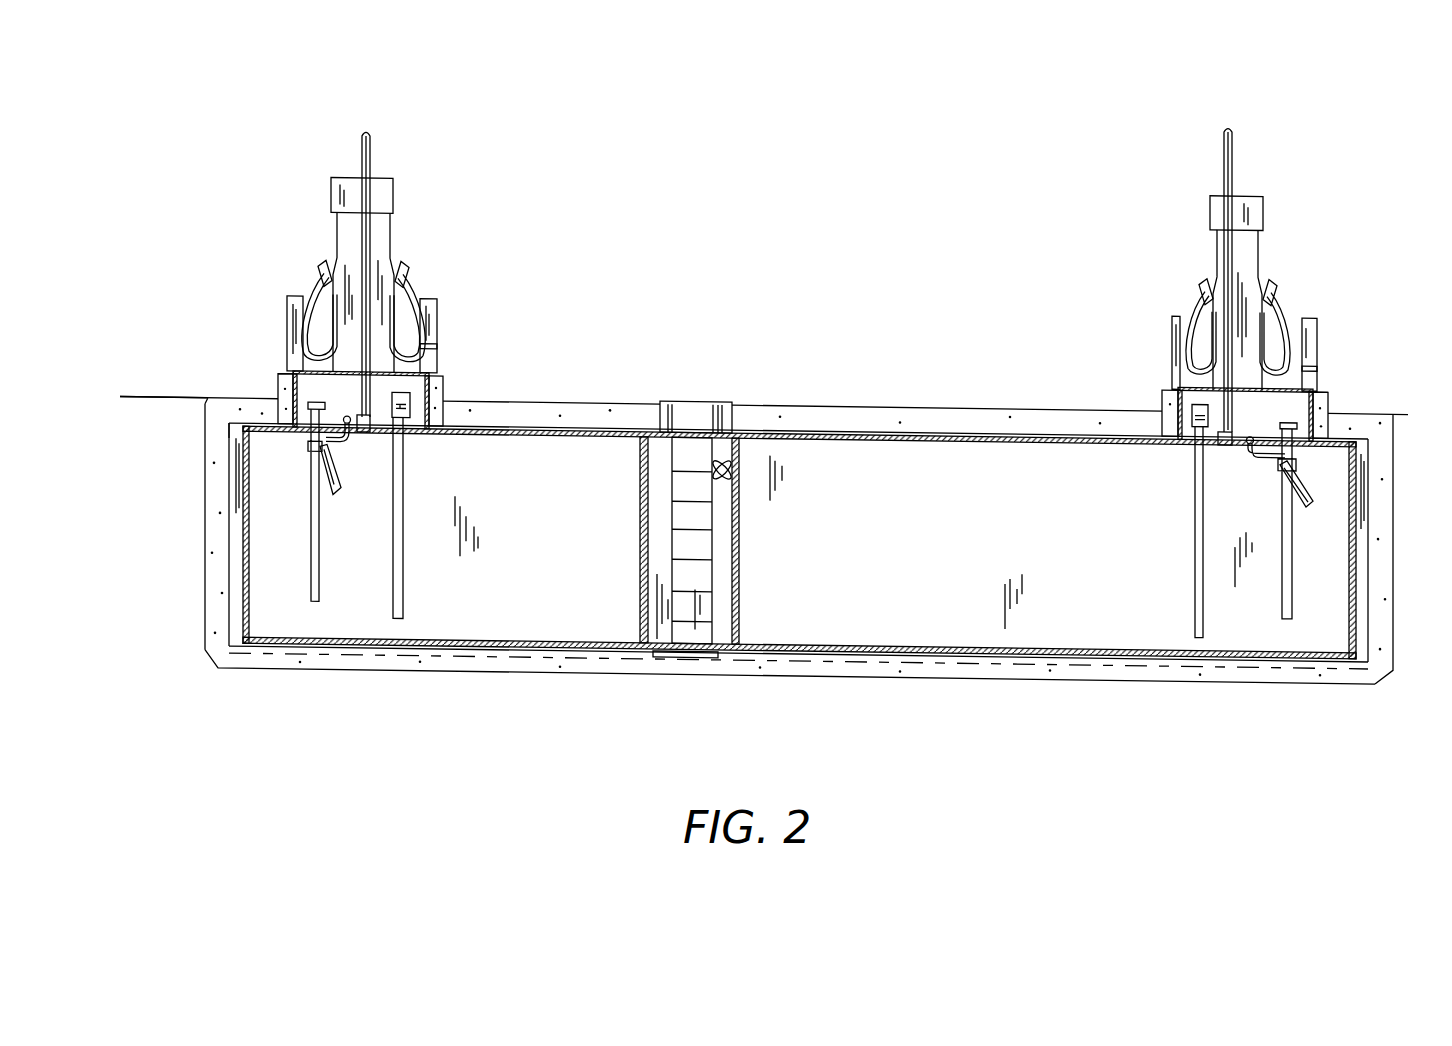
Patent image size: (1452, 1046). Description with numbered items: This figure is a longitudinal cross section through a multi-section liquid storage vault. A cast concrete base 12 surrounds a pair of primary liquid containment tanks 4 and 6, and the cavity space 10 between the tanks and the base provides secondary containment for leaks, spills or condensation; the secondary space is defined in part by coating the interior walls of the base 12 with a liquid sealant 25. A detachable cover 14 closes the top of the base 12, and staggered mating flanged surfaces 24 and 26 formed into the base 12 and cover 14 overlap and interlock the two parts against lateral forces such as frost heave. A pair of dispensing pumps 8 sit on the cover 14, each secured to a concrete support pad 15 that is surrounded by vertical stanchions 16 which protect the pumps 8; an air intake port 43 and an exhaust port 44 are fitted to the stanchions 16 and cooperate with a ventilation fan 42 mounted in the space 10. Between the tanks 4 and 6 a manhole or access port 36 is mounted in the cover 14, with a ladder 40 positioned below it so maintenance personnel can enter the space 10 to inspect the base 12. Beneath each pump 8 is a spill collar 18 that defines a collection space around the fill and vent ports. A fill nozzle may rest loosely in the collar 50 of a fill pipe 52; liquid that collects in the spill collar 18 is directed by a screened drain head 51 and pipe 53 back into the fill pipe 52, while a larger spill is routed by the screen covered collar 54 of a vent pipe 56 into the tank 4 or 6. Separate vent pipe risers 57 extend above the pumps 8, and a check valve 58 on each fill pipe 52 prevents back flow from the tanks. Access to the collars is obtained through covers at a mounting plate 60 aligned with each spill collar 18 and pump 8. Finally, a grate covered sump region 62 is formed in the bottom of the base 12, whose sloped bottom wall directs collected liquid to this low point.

The primary liquid containment tank 4 is at (245, 554).
The primary liquid containment tank 6 is at (1357, 588).
The dispensing pump 8 is at (391, 188).
The cavity space 10 is at (722, 626).
The cast concrete base 12 is at (1395, 536).
The detachable cover 14 is at (208, 425).
The concrete support pad 15 is at (443, 387).
The vertical stanchion 16 is at (432, 304).
The spill collar 18 is at (290, 384).
The flanged surface 24 is at (218, 435).
The liquid sealant 25 is at (225, 632).
The flanged surface 26 is at (218, 407).
The access port 36 is at (690, 402).
The ladder 40 is at (712, 545).
The ventilation fan 42 is at (735, 477).
The air intake port 43 is at (437, 349).
The exhaust port 44 is at (1316, 357).
The collar of fill pipe 50 is at (305, 406).
The screened drain head 51 is at (358, 440).
The fill pipe 52 is at (310, 568).
The drain pipe 53 is at (337, 452).
The screen covered collar 54 is at (410, 421).
The vent pipe 56 is at (405, 566).
The vent pipe riser 57 is at (360, 145).
The check valve 58 is at (338, 497).
The mounting plate 60 is at (445, 404).
The sump region 62 is at (697, 660).